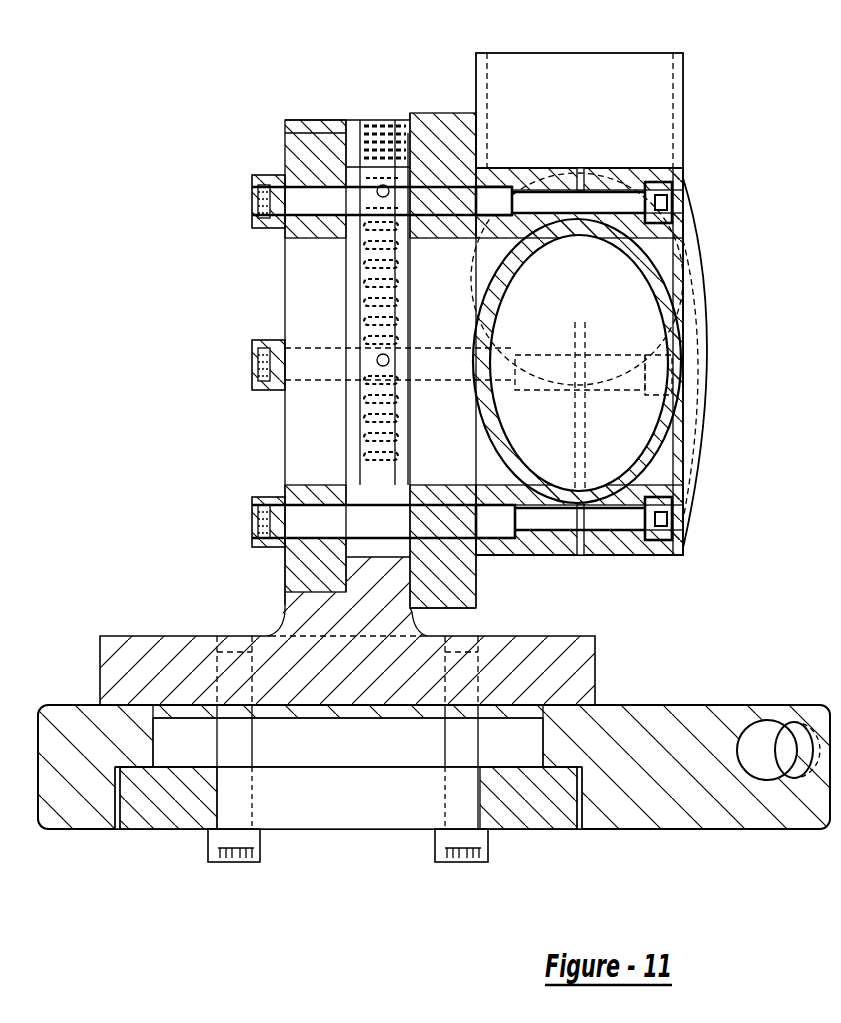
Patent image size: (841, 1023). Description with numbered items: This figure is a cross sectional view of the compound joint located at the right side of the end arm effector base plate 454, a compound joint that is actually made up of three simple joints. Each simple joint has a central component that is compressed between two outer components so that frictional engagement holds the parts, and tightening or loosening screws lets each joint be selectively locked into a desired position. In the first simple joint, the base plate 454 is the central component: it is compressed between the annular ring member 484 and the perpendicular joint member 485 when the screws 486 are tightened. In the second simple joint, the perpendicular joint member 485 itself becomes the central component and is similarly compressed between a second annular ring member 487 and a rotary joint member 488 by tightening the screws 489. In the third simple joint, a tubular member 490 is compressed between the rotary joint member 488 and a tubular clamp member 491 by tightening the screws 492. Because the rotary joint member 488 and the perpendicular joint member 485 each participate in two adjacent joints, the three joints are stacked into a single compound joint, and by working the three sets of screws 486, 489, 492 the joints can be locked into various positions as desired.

The end arm effector base plate 454 is at (768, 822).
The annular ring member 484 is at (533, 818).
The perpendicular joint member 485 is at (405, 648).
The screws 486 is at (262, 863).
The second annular ring member 487 is at (282, 157).
The rotary joint member 488 is at (427, 130).
The screws 489 is at (262, 224).
The tubular member 490 is at (658, 110).
The tubular clamp member 491 is at (670, 472).
The screws 492 is at (690, 185).